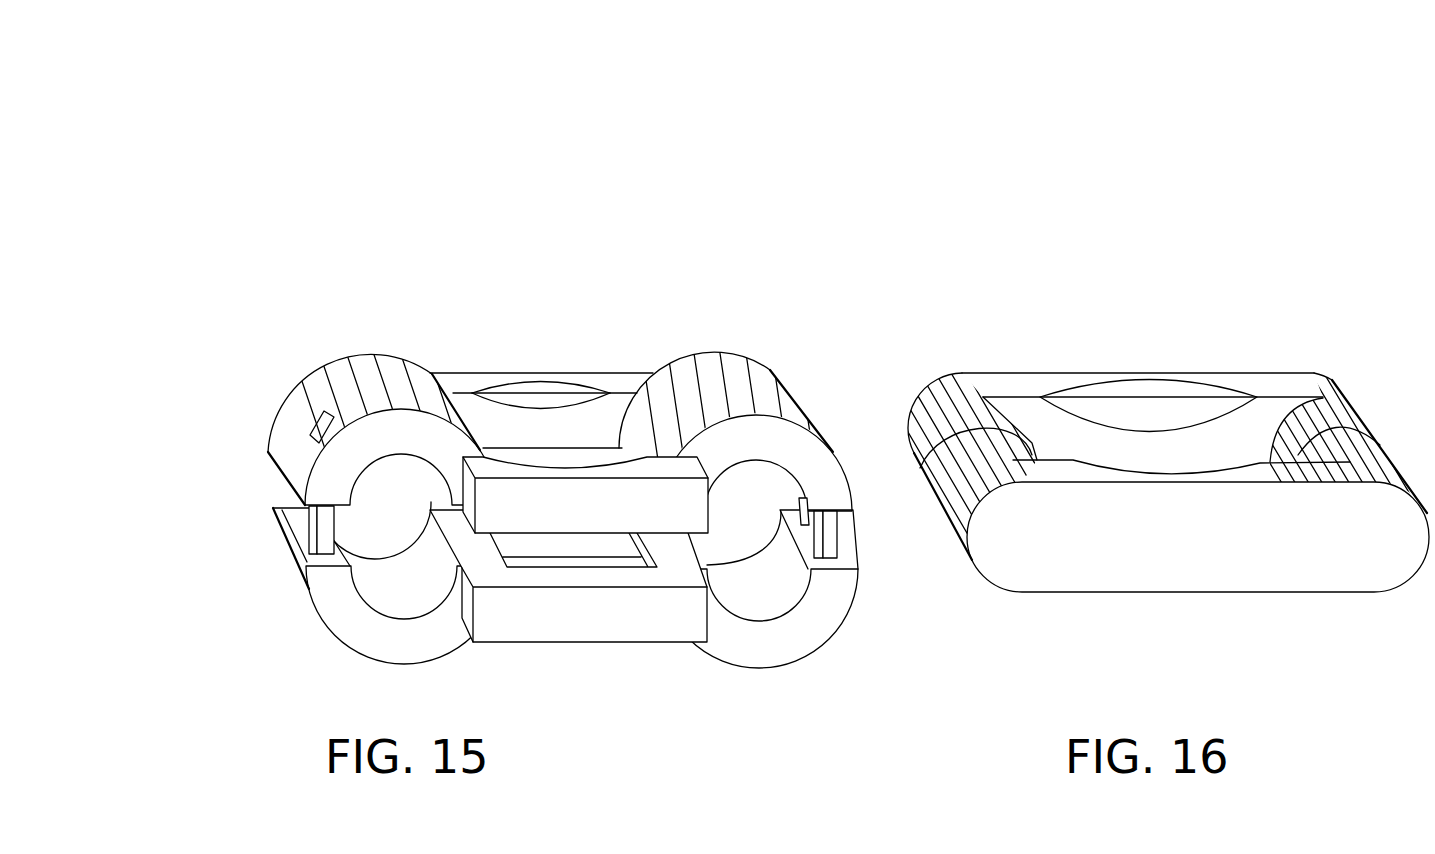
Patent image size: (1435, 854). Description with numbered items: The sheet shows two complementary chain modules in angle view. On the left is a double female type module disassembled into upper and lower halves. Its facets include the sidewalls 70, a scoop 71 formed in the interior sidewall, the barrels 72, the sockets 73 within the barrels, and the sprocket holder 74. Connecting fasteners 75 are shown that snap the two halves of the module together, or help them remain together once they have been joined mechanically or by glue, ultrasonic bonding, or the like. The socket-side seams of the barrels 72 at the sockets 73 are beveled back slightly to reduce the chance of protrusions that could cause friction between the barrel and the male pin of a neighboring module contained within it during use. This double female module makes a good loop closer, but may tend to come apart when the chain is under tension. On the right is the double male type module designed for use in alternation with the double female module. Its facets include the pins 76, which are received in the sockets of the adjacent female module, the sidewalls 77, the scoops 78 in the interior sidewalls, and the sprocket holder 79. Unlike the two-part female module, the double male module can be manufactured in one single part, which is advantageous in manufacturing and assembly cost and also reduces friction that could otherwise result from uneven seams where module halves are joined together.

In FIG. 15, the sidewalls 70 is at (540, 380).
In FIG. 15, the scoop in the interior sidewall 71 is at (585, 380).
In FIG. 15, the barrels 72 is at (720, 345).
In FIG. 15, the sockets within the barrels 73 is at (800, 607).
In FIG. 15, the sprocket holder 74 is at (532, 428).
In FIG. 15, the connecting fasteners 75 is at (293, 518).
In FIG. 16, the pins 76 is at (955, 420).
In FIG. 16, the sidewalls 77 is at (1103, 368).
In FIG. 16, the scoops in the interior sidewalls 78 is at (1150, 376).
In FIG. 16, the sprocket holder 79 is at (1203, 440).